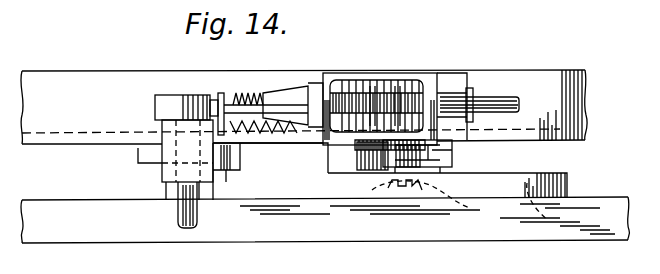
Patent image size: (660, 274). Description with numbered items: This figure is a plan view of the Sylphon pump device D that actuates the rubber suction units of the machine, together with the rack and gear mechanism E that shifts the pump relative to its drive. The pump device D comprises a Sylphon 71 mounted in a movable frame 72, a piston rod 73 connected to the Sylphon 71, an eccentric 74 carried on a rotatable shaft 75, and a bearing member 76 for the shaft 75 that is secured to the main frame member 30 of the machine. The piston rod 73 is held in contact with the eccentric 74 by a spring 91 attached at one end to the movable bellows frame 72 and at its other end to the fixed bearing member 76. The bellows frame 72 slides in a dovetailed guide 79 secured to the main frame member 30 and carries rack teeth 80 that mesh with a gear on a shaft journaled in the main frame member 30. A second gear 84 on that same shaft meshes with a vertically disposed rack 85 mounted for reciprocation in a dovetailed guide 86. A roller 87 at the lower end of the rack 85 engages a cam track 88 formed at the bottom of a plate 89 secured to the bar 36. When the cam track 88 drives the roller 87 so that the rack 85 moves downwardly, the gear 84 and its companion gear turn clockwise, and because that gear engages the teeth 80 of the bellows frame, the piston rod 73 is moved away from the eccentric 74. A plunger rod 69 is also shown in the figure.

The main frame member 30 is at (588, 87).
The bar 36 is at (432, 241).
The plunger rod 69 is at (485, 97).
The Sylphon 71 is at (398, 82).
The movable frame 72 is at (430, 80).
The piston rod 73 is at (247, 95).
The eccentric 74 is at (173, 98).
The rotatable shaft 75 is at (182, 210).
The bearing member 76 is at (138, 158).
The dovetailed guide 79 is at (464, 76).
The rack teeth 80 is at (384, 82).
The second gear 84 is at (357, 156).
The vertically disposed rack 85 is at (378, 166).
The dovetailed guide 86 is at (453, 156).
The roller 87 is at (472, 209).
The cam track 88 is at (549, 209).
The plate 89 is at (568, 193).
The spring 91 is at (246, 131).
The Sylphon pump device D is at (380, 96).
The rack and gear mechanism E is at (270, 171).